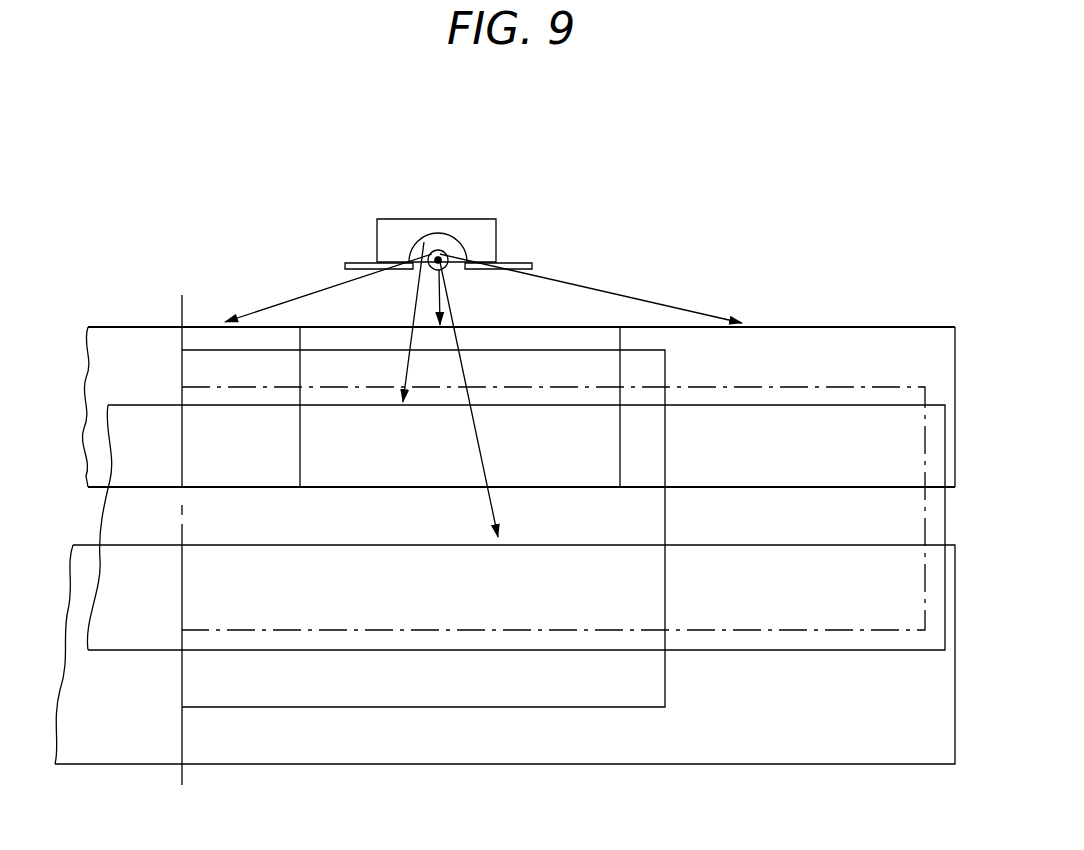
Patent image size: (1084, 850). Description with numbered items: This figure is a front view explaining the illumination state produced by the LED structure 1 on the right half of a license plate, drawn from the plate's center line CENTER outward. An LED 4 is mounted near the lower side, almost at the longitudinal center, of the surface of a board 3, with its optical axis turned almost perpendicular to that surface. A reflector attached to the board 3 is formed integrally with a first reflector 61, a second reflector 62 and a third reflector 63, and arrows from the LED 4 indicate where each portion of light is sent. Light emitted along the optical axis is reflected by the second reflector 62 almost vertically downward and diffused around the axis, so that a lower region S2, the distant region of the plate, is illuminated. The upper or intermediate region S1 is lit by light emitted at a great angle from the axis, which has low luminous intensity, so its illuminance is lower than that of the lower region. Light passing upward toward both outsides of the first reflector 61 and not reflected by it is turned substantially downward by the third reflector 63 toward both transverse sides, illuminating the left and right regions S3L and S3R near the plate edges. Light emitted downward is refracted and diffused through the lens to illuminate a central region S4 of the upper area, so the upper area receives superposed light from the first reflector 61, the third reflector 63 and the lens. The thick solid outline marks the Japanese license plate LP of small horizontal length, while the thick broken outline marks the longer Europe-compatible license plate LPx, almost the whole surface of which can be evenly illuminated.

The light emitting device (right, 1R) 1 is at (483, 344).
The board 3 is at (425, 219).
The LED 4 is at (440, 255).
The first reflector 61 is at (462, 243).
The second reflector 62 is at (445, 266).
The third reflector 63 is at (350, 265).
The intermediate region S1 is at (777, 404).
The lower region S2 is at (528, 545).
The left region S3L is at (152, 327).
The right region S3R is at (877, 327).
The central region S4 is at (587, 327).
The license plate LP is at (442, 707).
The license plate LPx is at (793, 630).
The center line CENTER is at (176, 558).